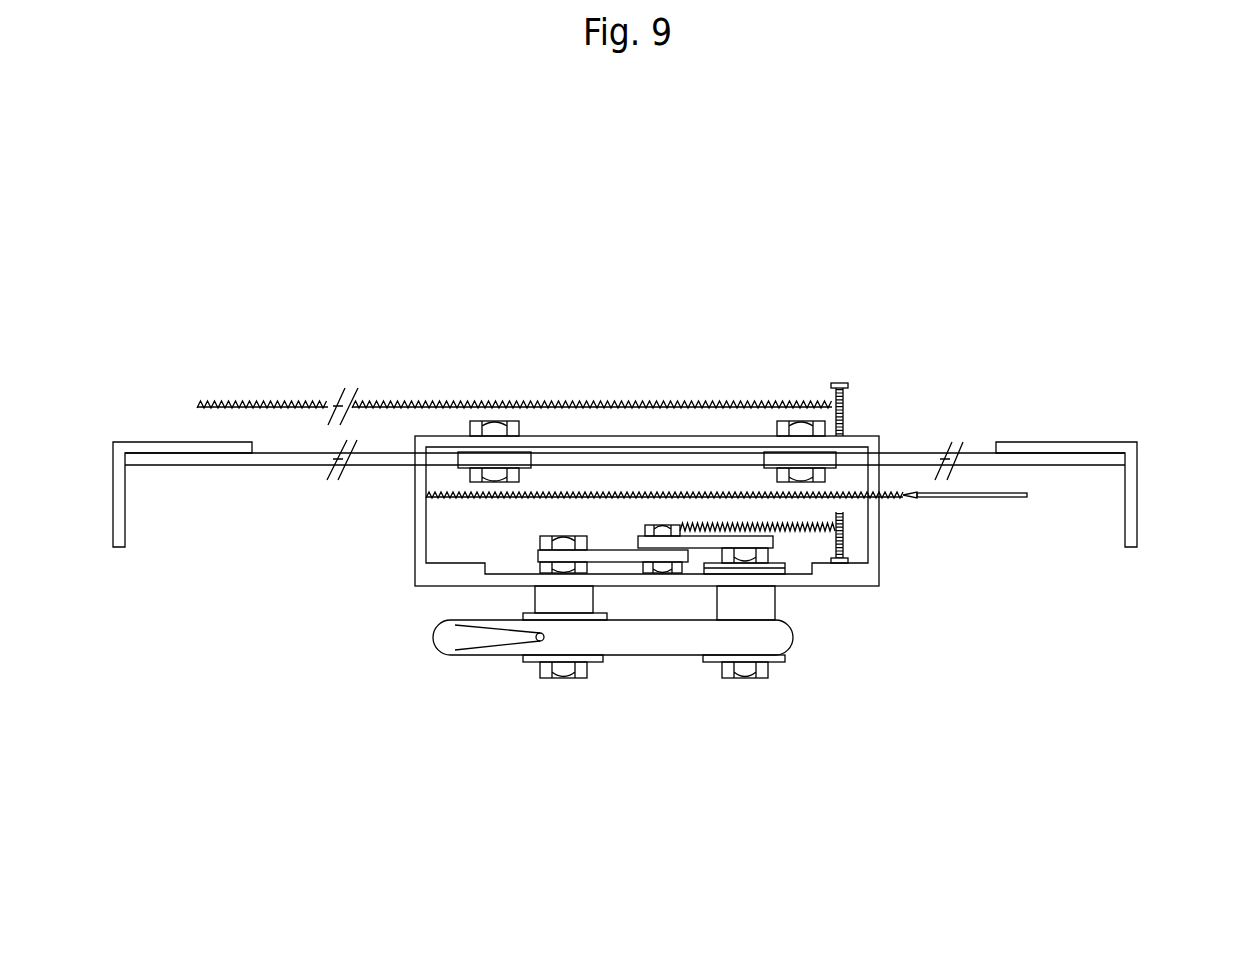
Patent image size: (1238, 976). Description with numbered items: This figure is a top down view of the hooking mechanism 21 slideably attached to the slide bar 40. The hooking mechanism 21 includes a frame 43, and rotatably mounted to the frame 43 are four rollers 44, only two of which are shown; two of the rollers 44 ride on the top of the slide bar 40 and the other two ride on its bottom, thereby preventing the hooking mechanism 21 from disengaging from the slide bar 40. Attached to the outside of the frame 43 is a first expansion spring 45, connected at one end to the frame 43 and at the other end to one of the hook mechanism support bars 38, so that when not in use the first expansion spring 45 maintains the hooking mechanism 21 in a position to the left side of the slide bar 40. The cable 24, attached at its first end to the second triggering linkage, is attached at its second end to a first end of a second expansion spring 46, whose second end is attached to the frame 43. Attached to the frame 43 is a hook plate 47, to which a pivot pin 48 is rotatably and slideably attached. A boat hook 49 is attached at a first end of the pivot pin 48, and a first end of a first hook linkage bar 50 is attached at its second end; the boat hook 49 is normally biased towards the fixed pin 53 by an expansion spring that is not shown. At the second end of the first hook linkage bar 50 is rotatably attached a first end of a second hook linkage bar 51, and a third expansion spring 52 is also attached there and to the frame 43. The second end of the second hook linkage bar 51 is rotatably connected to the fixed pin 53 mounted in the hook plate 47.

The hooking mechanism 21 is at (578, 850).
The cable 24 is at (982, 499).
The hook mechanism support bar 38 is at (152, 443).
The slide bar 40 is at (287, 456).
The frame 43 is at (414, 509).
The rollers 44 is at (461, 451).
The first expansion spring 45 is at (647, 399).
The second expansion spring 46 is at (470, 503).
The hook plate 47 is at (775, 547).
The pivot pin 48 is at (774, 604).
The boat hook 49 is at (657, 656).
The first hook linkage bar 50 is at (813, 588).
The second hook linkage bar 51 is at (610, 548).
The third expansion spring 52 is at (822, 521).
The fixed pin 53 is at (533, 603).